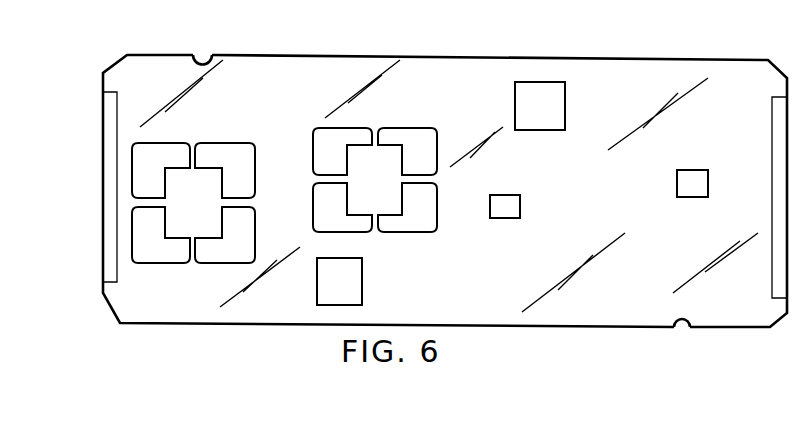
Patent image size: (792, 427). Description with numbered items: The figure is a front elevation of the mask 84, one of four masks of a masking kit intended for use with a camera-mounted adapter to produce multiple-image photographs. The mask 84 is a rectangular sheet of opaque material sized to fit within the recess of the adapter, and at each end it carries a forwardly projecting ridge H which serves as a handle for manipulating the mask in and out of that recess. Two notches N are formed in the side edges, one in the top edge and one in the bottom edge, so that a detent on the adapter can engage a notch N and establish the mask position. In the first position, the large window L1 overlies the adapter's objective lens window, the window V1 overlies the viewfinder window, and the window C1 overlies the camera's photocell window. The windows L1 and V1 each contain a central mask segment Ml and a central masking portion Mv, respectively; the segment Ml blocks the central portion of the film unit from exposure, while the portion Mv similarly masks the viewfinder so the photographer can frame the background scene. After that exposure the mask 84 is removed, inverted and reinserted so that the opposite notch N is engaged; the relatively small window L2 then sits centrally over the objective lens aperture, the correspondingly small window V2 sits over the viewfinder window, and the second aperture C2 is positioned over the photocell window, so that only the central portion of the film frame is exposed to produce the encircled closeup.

The notch N is at (212, 56).
The forwardly projecting ridge H is at (119, 99).
The central mask segment Ml is at (193, 203).
The objective lens window L1 is at (222, 143).
The central masking portion Mv is at (375, 180).
The viewfinder window V1 is at (388, 137).
The second aperture C2 is at (560, 103).
The small viewfinder window V2 is at (498, 218).
The mask 84 is at (609, 215).
The small objective lens window L2 is at (697, 197).
The photocell window C1 is at (357, 272).